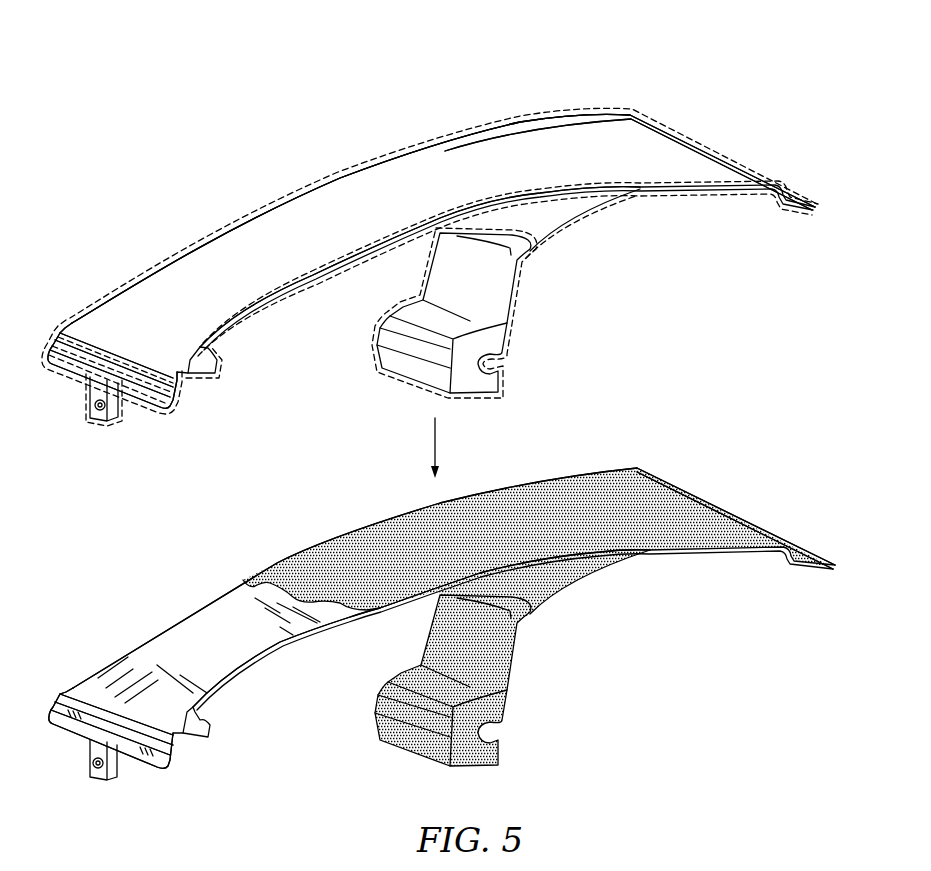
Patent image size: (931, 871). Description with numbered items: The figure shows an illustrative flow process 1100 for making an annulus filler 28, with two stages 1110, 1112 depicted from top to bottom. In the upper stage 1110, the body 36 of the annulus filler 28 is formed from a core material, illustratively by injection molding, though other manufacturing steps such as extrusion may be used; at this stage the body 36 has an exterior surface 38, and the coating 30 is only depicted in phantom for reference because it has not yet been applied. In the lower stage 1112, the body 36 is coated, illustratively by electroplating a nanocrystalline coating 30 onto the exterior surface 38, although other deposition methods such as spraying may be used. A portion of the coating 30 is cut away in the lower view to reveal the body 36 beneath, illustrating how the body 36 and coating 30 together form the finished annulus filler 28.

The flow process 1100 is at (146, 112).
The stage of forming the body 1110 is at (700, 108).
The body 36 is at (503, 160).
The exterior surface 38 is at (285, 218).
The stage of coating the body 1112 is at (678, 466).
The annulus filler 28 is at (740, 480).
The coating 30 is at (575, 495).